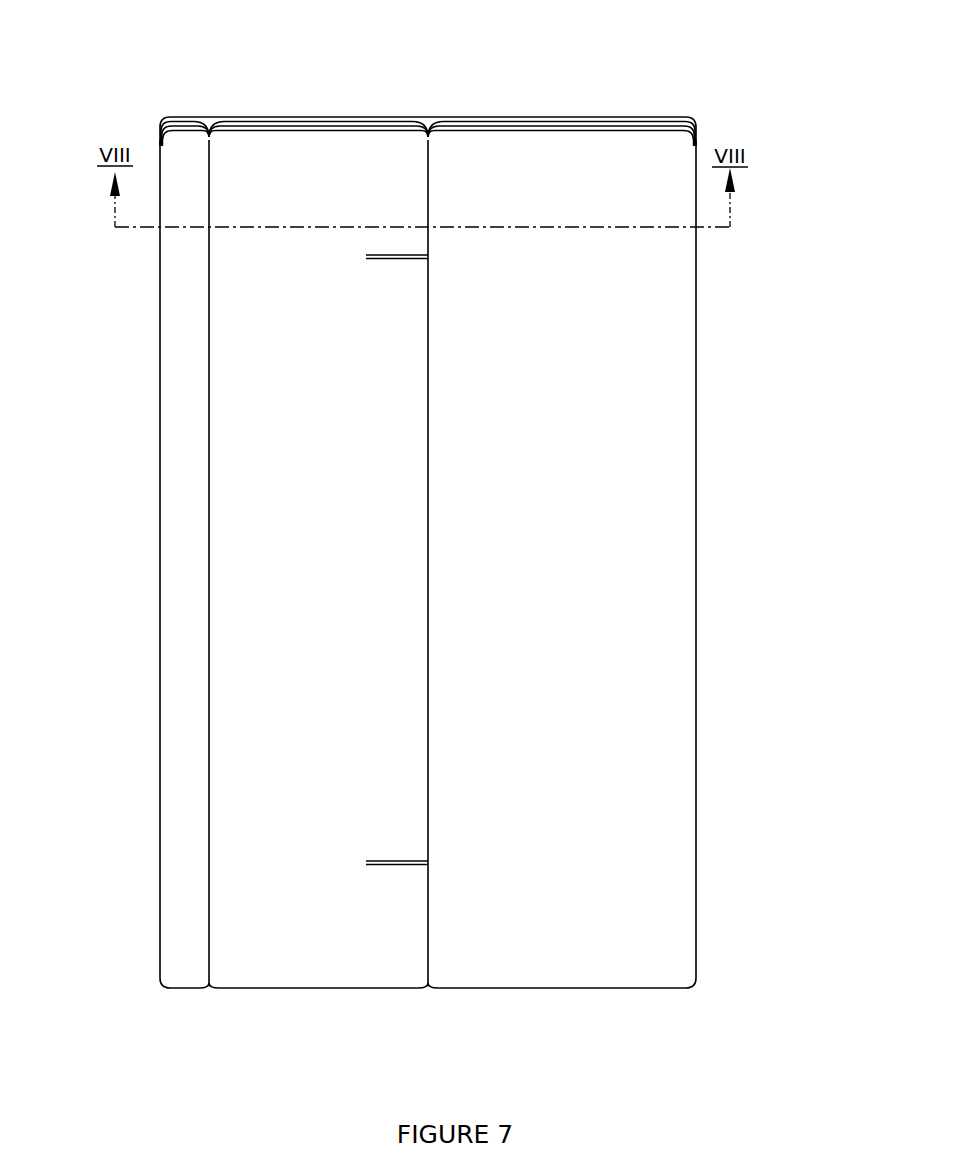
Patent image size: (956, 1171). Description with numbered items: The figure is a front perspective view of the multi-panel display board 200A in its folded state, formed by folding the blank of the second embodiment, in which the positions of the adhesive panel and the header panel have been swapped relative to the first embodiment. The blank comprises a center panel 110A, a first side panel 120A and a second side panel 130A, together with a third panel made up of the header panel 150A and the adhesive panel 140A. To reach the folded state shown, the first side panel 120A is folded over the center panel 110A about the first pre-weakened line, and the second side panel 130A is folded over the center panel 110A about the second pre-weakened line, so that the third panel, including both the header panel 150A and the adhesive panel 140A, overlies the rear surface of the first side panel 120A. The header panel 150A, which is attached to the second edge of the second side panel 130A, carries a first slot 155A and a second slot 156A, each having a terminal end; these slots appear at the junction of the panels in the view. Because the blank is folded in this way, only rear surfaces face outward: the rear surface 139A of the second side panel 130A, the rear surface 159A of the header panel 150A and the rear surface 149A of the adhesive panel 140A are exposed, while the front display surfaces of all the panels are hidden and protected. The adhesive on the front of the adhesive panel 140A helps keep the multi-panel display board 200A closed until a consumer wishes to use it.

The multi-panel display board 200A is at (176, 82).
The center panel 110A is at (433, 131).
The first side panel 120A is at (190, 128).
The second side panel 130A is at (672, 327).
The adhesive panel 140A is at (195, 158).
The header panel 150A is at (387, 170).
The rear surface of the adhesive panel 149A is at (187, 325).
The rear surface of the second side panel 139A is at (611, 914).
The rear surface of the header panel 159A is at (359, 914).
The first slot 155A is at (395, 261).
The second slot 156A is at (393, 859).